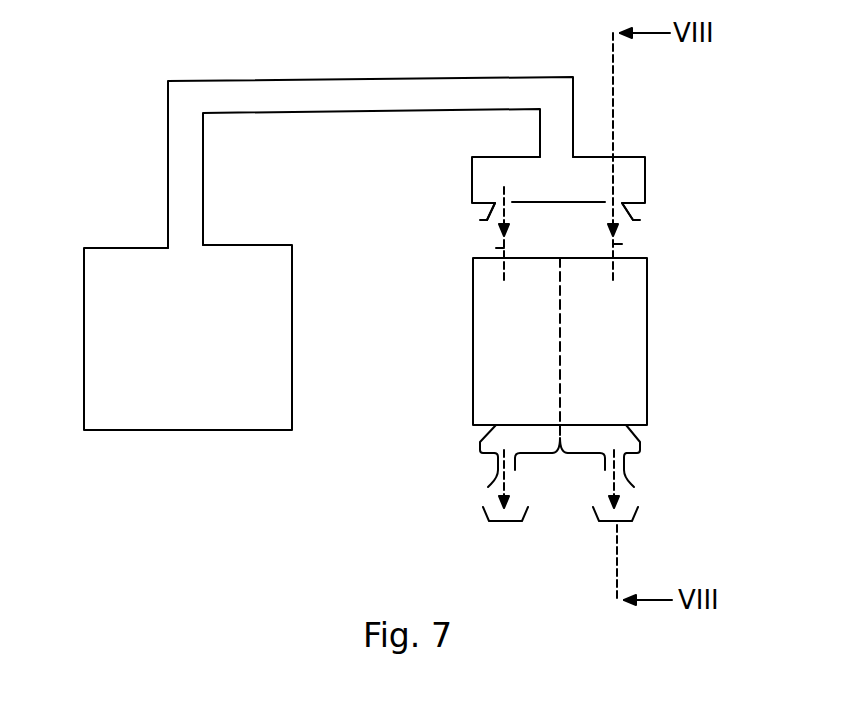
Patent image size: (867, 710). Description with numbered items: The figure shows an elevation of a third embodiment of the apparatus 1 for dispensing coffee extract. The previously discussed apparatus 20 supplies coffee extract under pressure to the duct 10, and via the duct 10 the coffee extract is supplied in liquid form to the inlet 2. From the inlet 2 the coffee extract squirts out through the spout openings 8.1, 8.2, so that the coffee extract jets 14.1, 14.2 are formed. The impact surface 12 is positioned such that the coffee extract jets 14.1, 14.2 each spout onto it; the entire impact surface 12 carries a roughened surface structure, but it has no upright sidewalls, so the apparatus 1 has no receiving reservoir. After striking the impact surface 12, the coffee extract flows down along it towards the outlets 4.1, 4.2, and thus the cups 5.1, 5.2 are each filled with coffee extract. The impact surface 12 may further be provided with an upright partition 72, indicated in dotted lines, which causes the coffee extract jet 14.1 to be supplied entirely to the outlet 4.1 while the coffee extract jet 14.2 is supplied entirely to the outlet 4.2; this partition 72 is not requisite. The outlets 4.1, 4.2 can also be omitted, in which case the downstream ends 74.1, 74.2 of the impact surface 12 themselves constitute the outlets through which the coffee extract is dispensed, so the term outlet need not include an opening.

The apparatus 1 is at (391, 409).
The inlet 2 is at (573, 115).
The duct 10 is at (372, 77).
The impact surface 12 is at (647, 313).
The apparatus 20 is at (292, 337).
The spout opening 8.1 is at (480, 221).
The spout opening 8.2 is at (640, 219).
The coffee extract jet 14.1 is at (496, 248).
The coffee extract jet 14.2 is at (622, 244).
The upright partition 72 is at (560, 367).
The downstream end 74.1 is at (480, 442).
The downstream end 74.2 is at (640, 442).
The outlet 4.1 is at (488, 487).
The outlet 4.2 is at (634, 487).
The cup 5.1 is at (512, 522).
The cup 5.2 is at (617, 522).